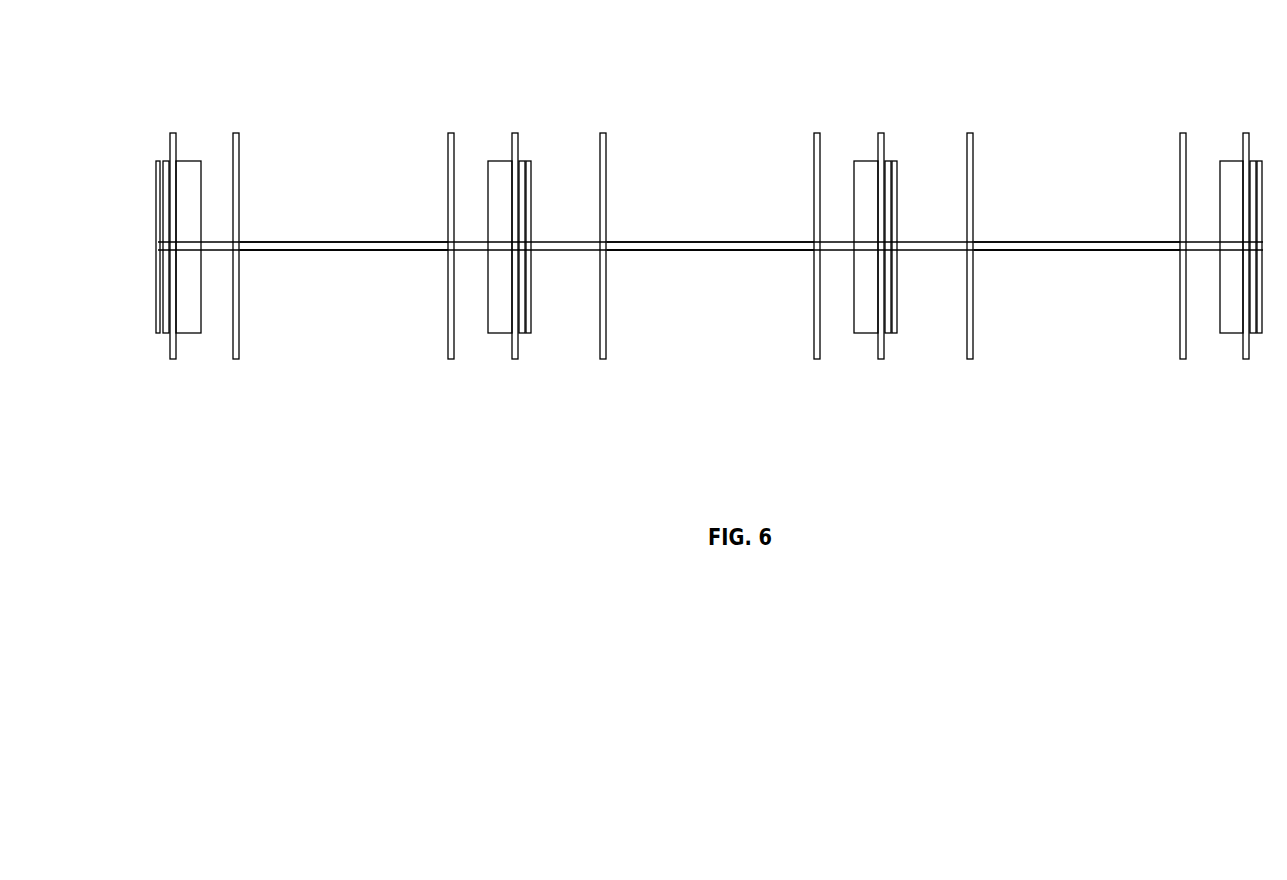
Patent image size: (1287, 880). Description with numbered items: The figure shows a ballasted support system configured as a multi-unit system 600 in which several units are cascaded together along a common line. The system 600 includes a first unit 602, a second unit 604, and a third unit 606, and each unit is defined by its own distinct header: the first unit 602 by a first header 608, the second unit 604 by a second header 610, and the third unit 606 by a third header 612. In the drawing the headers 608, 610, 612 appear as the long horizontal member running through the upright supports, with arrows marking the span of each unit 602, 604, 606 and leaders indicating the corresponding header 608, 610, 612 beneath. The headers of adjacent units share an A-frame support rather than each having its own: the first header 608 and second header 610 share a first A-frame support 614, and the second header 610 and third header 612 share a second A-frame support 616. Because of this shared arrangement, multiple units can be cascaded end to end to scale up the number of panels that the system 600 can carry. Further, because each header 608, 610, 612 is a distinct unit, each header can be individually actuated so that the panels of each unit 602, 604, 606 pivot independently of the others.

The multi-unit system 600 is at (124, 80).
The first unit 602 is at (361, 230).
The second unit 604 is at (715, 228).
The third unit 606 is at (1086, 228).
The first header 608 is at (312, 251).
The second header 610 is at (676, 251).
The third header 612 is at (1055, 251).
The first A-frame support 614 is at (525, 334).
The second A-frame support 616 is at (891, 334).